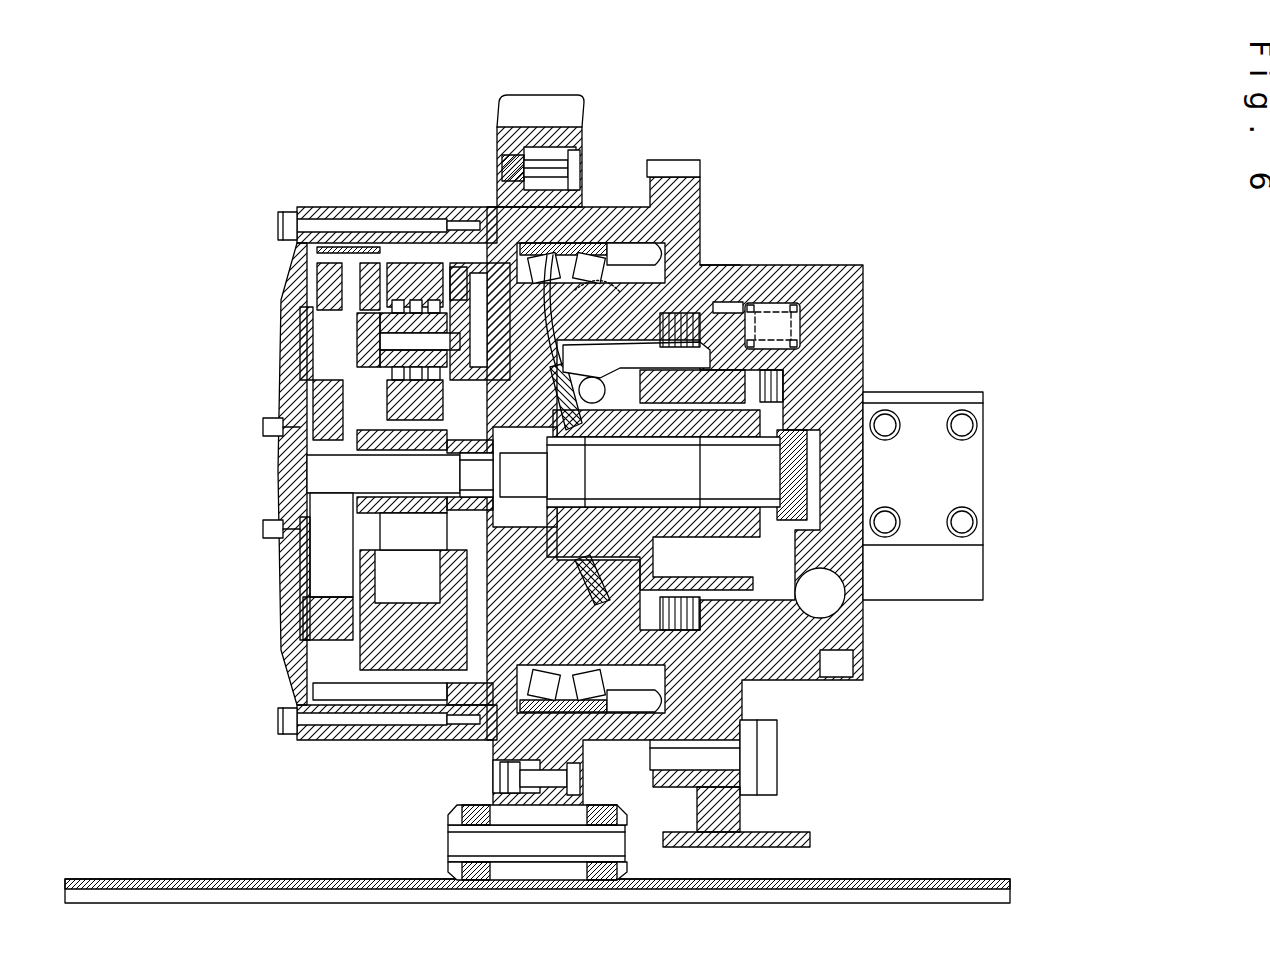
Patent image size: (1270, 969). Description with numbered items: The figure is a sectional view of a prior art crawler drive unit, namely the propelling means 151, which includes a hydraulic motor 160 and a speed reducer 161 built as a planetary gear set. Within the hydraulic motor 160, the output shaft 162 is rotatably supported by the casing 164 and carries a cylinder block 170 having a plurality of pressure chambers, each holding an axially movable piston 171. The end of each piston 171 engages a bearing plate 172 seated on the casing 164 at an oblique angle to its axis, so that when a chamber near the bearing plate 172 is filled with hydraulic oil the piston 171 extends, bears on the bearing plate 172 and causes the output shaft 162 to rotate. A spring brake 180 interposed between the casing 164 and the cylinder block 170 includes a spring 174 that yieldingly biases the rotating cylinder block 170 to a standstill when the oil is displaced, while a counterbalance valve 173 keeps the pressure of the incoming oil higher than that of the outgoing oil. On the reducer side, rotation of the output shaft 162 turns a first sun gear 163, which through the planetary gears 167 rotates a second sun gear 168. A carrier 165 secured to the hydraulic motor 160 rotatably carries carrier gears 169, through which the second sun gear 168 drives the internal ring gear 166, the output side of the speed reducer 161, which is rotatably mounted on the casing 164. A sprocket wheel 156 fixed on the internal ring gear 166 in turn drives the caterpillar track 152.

The propelling means 151 is at (812, 201).
The caterpillar track 152 is at (933, 880).
The sprocket wheel 156 is at (608, 783).
The hydraulic motor 160 is at (870, 297).
The speed reducer 161 is at (293, 636).
The output shaft 162 is at (572, 474).
The first sun gear 163 is at (328, 525).
The casing 164 is at (750, 670).
The carrier 165 is at (400, 683).
The internal ring gear 166 is at (360, 253).
The planetary gears 167 is at (304, 297).
The second sun gear 168 is at (415, 515).
The carrier gears 169 is at (413, 273).
The cylinder block 170 is at (745, 405).
The piston 171 is at (790, 362).
The bearing plate 172 is at (556, 365).
The counterbalance valve 173 is at (975, 473).
The spring 174 is at (797, 304).
The spring brake 180 is at (714, 304).